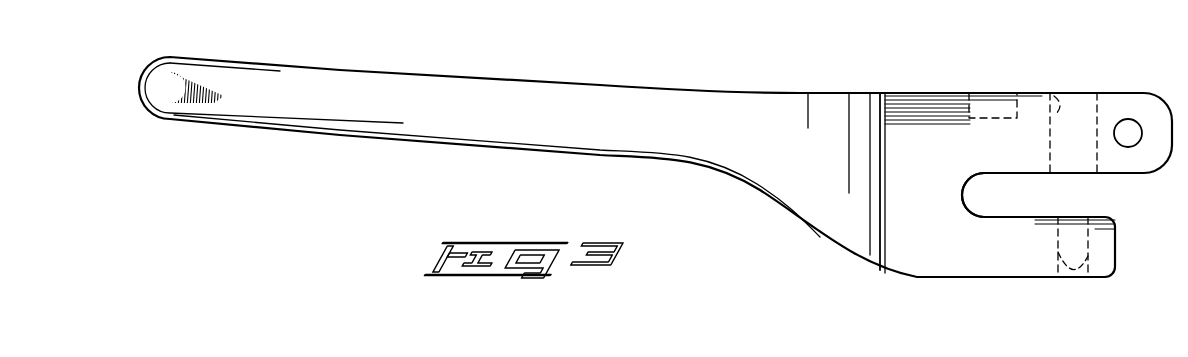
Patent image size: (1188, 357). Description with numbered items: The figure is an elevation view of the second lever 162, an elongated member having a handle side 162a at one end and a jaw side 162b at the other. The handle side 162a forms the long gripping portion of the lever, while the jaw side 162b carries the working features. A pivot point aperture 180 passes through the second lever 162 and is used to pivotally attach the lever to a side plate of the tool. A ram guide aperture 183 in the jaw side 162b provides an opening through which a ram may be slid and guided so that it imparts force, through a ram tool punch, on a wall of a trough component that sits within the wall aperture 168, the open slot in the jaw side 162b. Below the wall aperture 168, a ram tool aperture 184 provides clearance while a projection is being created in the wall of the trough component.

The second lever 162 is at (571, 110).
The handle side 162a is at (223, 93).
The jaw side 162b is at (970, 157).
The wall aperture 168 is at (1040, 205).
The pivot point aperture 180 is at (1129, 128).
The ram guide aperture 183 is at (1097, 110).
The ram tool aperture 184 is at (1075, 277).